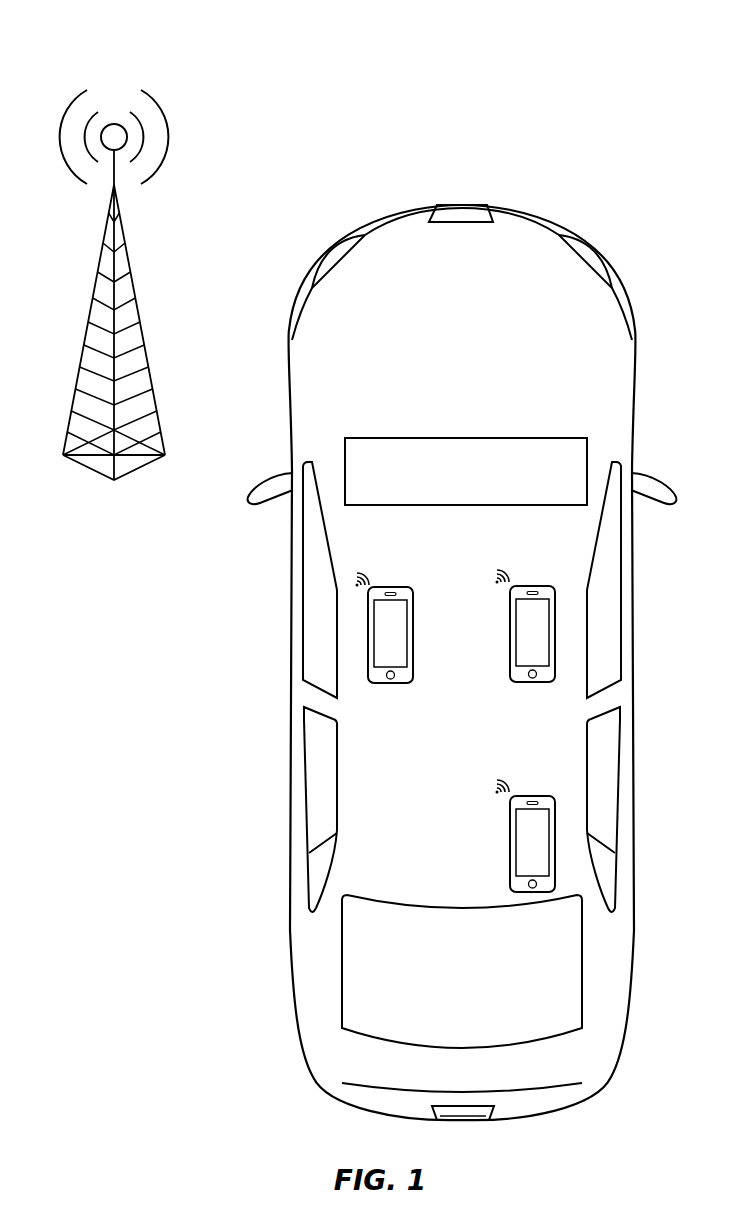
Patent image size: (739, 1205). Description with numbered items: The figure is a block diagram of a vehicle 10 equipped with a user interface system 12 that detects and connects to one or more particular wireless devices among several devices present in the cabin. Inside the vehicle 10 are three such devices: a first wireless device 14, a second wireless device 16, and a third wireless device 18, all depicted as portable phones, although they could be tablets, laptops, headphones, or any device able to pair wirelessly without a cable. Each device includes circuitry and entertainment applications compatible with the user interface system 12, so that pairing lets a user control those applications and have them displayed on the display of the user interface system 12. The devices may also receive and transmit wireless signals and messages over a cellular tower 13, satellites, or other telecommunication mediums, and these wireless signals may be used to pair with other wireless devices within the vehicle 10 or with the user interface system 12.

The vehicle 10 is at (612, 56).
The user interface system 12 is at (465, 437).
The cellular tower 13 is at (141, 337).
The first wireless device 14 is at (368, 635).
The second wireless device 16 is at (555, 630).
The third wireless device 18 is at (555, 840).